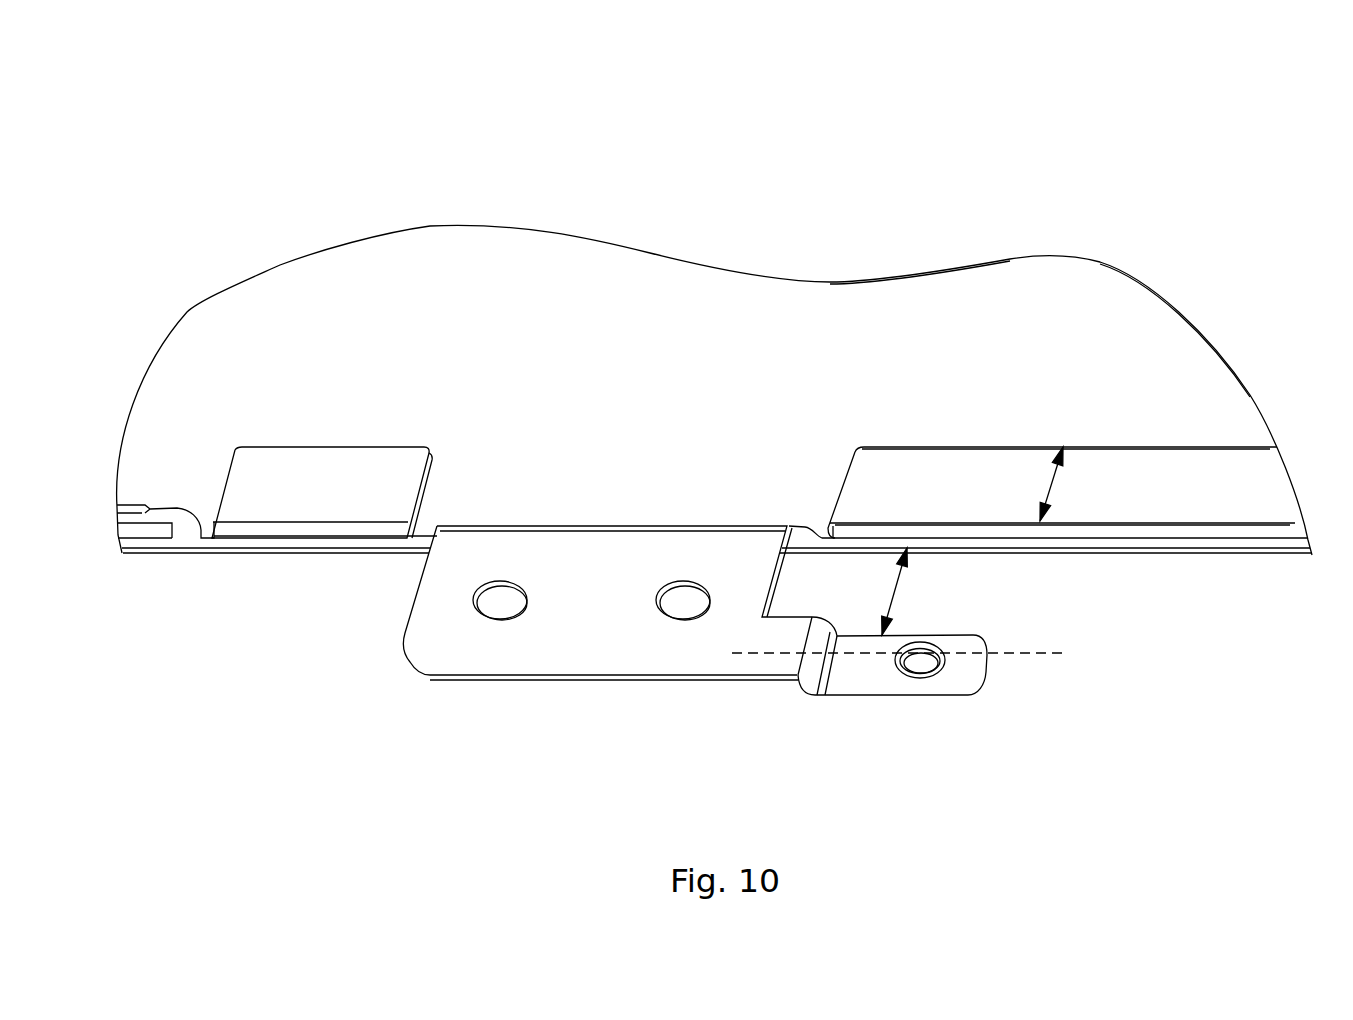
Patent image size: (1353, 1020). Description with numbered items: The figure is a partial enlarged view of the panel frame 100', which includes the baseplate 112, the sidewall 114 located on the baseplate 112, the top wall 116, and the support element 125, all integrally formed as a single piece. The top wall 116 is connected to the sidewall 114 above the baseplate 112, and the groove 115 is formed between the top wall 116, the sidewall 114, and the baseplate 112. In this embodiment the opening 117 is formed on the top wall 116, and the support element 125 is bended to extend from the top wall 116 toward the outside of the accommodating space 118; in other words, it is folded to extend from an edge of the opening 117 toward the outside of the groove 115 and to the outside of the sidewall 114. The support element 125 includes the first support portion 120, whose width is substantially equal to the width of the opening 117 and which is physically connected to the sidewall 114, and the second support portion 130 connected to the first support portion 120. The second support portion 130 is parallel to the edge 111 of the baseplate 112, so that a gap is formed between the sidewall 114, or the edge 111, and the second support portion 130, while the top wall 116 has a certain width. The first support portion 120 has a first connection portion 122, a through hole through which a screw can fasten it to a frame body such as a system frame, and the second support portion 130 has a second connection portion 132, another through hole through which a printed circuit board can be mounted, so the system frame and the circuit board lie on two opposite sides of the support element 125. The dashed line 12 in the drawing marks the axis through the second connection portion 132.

The panel frame 100' is at (714, 453).
The edge 111 is at (1277, 556).
The baseplate 112 is at (912, 362).
The sidewall 114 is at (1015, 530).
The groove 115 is at (838, 487).
The top wall 116 is at (950, 490).
The opening 117 is at (503, 482).
The accommodating space 118 is at (1140, 340).
The first support portion 120 is at (695, 655).
The first connection portion 122 is at (657, 595).
The support element 125 is at (594, 760).
The second support portion 130 is at (850, 680).
The second connection portion 132 is at (932, 678).
The axis 12 is at (748, 655).